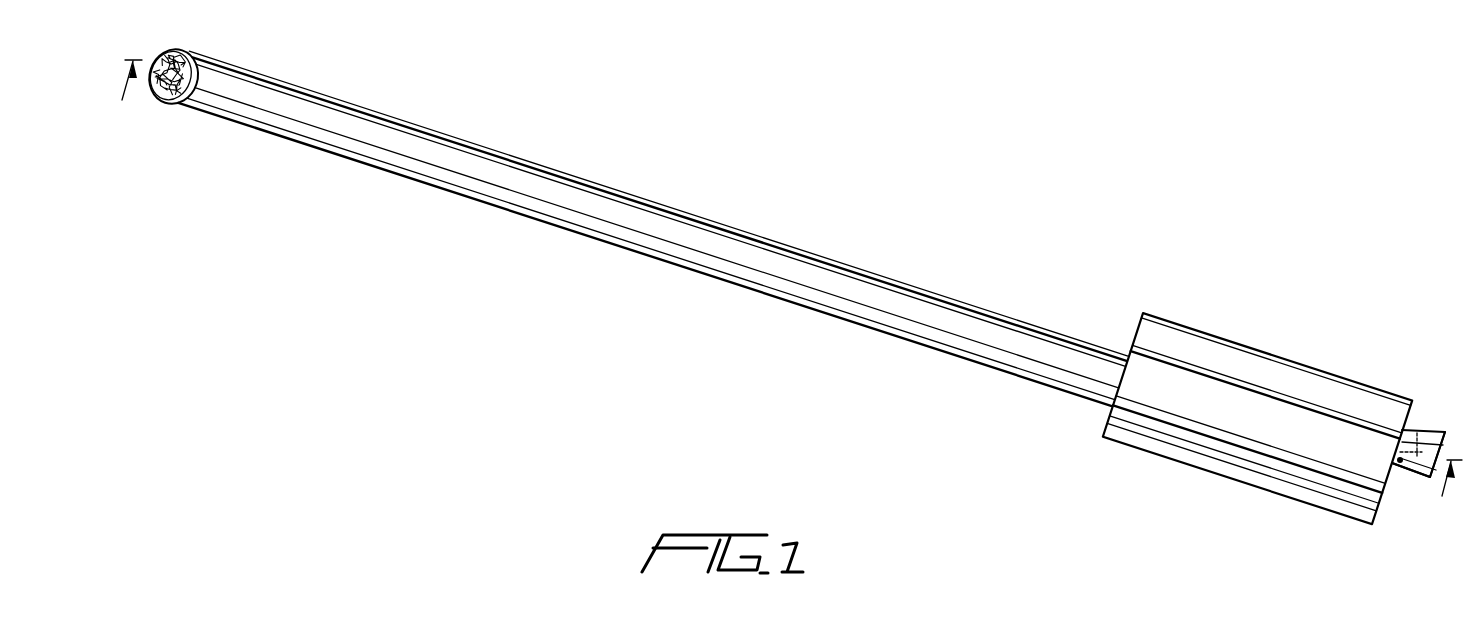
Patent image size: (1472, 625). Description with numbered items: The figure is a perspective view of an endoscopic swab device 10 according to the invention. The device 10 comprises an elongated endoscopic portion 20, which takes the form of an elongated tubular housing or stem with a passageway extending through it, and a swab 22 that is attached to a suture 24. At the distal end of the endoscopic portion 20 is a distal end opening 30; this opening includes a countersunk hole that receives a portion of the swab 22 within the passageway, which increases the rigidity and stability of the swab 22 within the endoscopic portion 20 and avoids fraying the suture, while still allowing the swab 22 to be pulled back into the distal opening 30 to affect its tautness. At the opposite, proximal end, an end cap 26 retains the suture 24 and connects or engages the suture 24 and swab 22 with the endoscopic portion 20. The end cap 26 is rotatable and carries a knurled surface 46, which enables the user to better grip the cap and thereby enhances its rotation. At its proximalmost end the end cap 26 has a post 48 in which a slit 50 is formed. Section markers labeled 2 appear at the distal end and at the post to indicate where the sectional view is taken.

The endoscopic swab device 10 is at (762, 208).
The elongated endoscopic portion 20 is at (853, 267).
The swab 22 is at (170, 54).
The distal end opening 30 is at (172, 106).
The end cap 26 is at (1185, 325).
The knurled surface 46 is at (1257, 388).
The suture 24 is at (1422, 426).
The post 48 is at (1418, 470).
The slit 50 is at (1446, 432).
The section line 2 is at (792, 290).